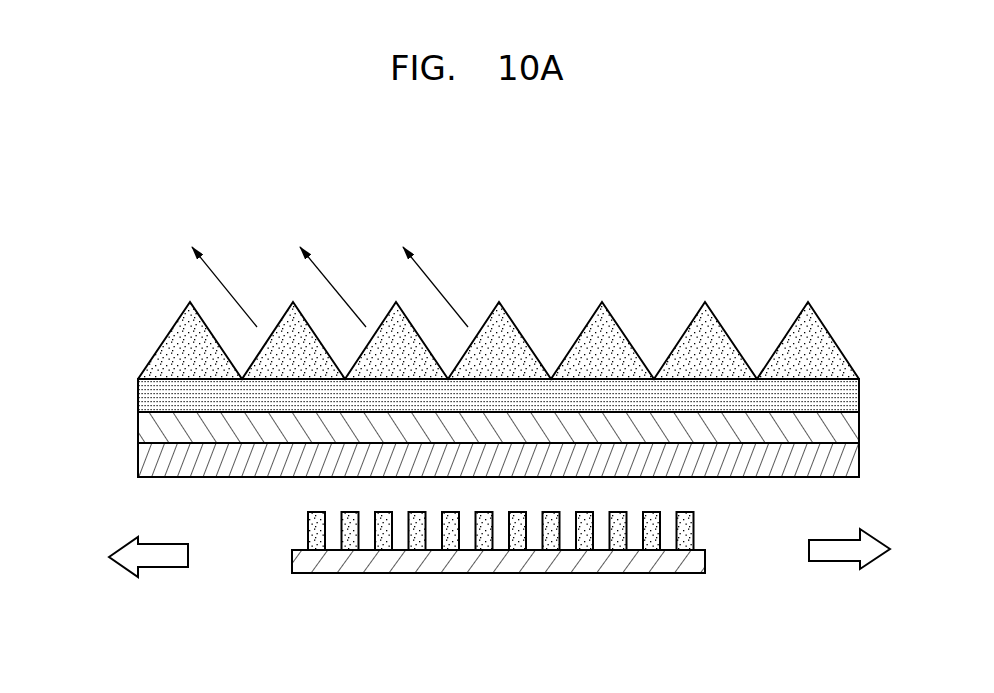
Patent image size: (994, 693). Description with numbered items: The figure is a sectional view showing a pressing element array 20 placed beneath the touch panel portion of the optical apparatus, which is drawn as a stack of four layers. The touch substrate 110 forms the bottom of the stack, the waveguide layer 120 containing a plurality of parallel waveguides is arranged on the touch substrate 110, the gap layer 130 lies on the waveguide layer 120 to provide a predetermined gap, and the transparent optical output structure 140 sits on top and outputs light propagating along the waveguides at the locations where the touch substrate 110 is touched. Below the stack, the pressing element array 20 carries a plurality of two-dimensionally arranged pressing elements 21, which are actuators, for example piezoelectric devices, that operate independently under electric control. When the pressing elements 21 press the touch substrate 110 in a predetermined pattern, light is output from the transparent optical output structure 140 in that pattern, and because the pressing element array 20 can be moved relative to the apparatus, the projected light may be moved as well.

The touch substrate 110 is at (160, 459).
The waveguide layer 120 is at (160, 424).
The gap layer 130 is at (160, 389).
The transparent optical output structure 140 is at (160, 338).
The pressing element array 20 is at (603, 580).
The pressing elements 21 is at (688, 528).